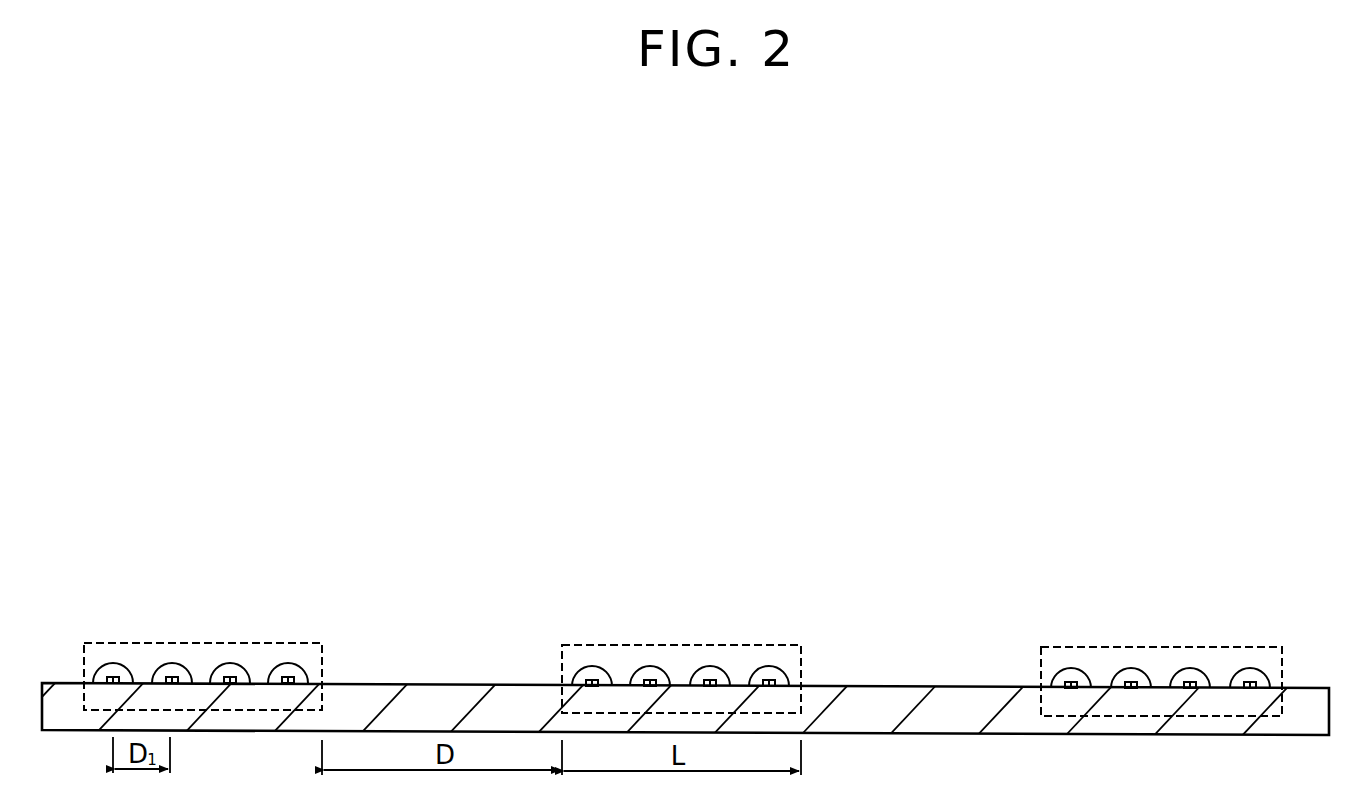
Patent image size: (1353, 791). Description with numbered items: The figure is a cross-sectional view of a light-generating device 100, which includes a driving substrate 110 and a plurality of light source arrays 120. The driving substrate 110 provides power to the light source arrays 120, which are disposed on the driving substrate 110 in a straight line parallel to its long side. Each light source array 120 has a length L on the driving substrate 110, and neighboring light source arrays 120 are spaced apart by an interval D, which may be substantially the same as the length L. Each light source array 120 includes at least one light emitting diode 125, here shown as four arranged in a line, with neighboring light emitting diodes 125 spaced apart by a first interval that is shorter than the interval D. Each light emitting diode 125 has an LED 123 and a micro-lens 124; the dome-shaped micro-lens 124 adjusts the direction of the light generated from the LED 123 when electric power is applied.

The light-generating device 100 is at (670, 628).
The driving substrate 110 is at (352, 698).
The light source array 120 is at (186, 615).
The light emitting diode (LED) 123 is at (84, 624).
The micro-lens 124 is at (118, 666).
The light emitting diode 125 is at (117, 602).